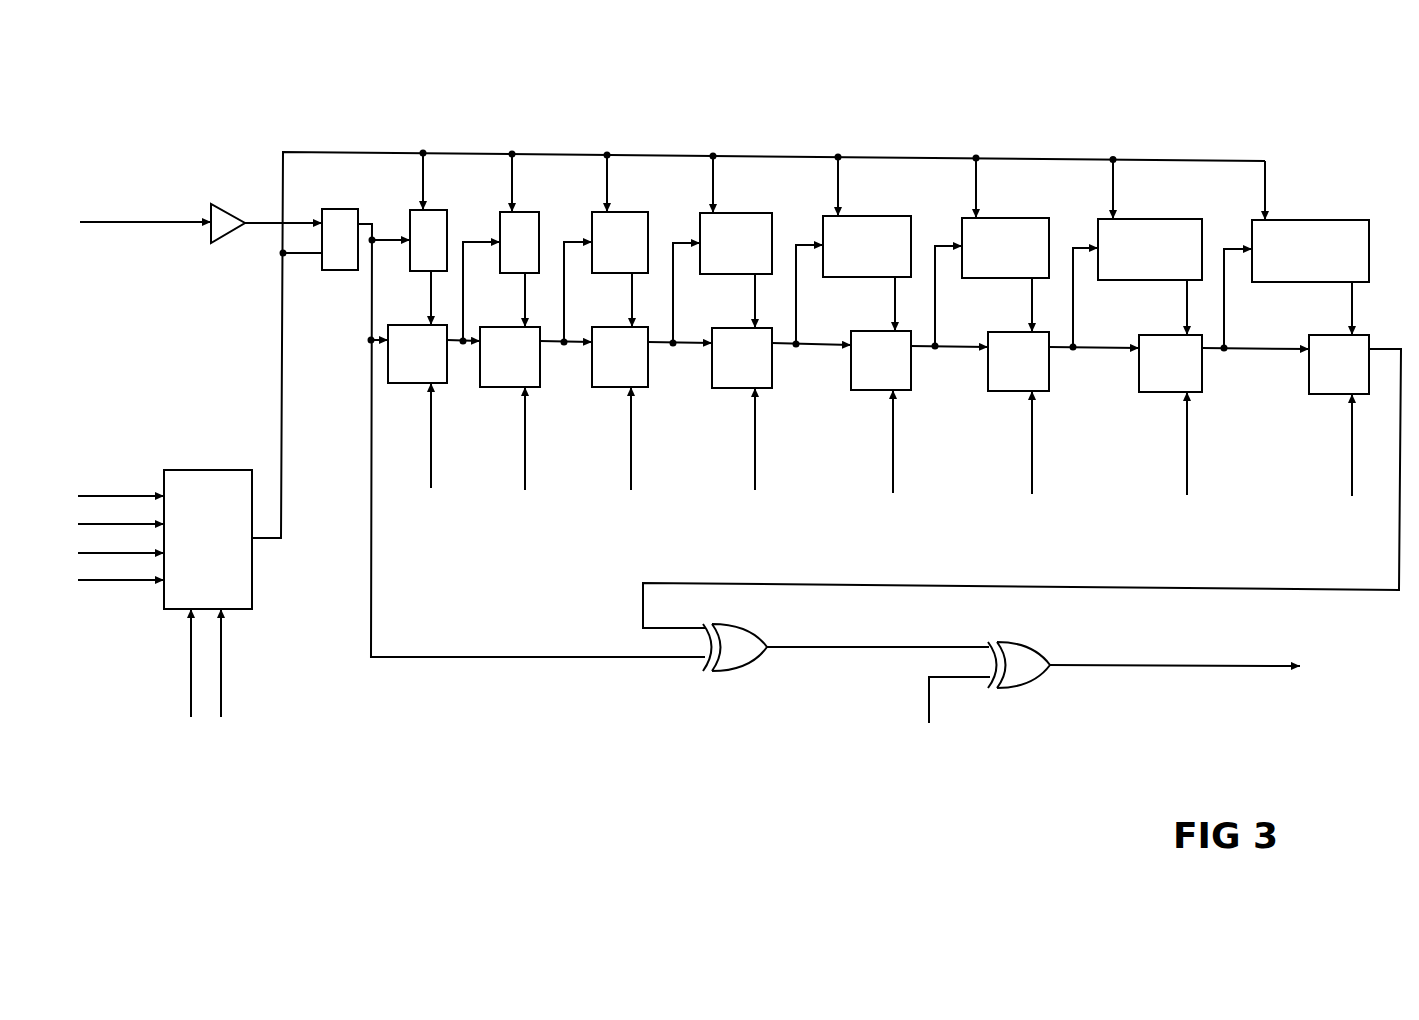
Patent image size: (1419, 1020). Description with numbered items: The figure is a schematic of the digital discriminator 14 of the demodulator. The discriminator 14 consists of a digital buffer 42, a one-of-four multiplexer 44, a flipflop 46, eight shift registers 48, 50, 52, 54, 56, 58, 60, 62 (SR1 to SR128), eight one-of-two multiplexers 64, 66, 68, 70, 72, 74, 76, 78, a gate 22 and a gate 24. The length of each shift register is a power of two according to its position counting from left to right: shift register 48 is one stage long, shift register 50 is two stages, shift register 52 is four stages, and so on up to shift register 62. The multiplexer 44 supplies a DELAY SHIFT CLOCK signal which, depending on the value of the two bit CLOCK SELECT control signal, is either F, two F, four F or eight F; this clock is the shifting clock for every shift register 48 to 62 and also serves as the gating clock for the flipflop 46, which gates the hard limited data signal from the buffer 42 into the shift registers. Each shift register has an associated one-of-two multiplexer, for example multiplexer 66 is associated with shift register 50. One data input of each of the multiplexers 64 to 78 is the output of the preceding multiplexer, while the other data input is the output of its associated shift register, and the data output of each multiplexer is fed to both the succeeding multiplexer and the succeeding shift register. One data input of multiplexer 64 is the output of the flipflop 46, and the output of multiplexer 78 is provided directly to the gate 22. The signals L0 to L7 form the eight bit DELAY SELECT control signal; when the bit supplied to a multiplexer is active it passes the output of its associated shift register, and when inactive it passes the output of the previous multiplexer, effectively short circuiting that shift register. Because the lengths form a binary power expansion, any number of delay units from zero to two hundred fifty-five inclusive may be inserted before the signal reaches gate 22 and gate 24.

The discriminator 14 is at (487, 792).
The gate 22 is at (743, 625).
The gate 24 is at (1040, 650).
The digital buffer 42 is at (231, 236).
The 1 of 4 multiplexer 44 is at (222, 470).
The flipflop 46 is at (348, 209).
The shift register 48 is at (443, 210).
The shift register 50 is at (537, 212).
The shift register 52 is at (635, 212).
The shift register 54 is at (755, 213).
The shift register 56 is at (888, 216).
The shift register 58 is at (1020, 218).
The shift register 60 is at (1183, 219).
The shift register 62 is at (1333, 220).
The 1 of 2 multiplexer 64 is at (412, 325).
The 1 of 2 multiplexer 66 is at (500, 327).
The 1 of 2 multiplexer 68 is at (610, 327).
The 1 of 2 multiplexer 70 is at (733, 328).
The 1 of 2 multiplexer 72 is at (872, 331).
The 1 of 2 multiplexer 74 is at (1010, 332).
The 1 of 2 multiplexer 76 is at (1165, 335).
The 1 of 2 multiplexer 78 is at (1330, 335).